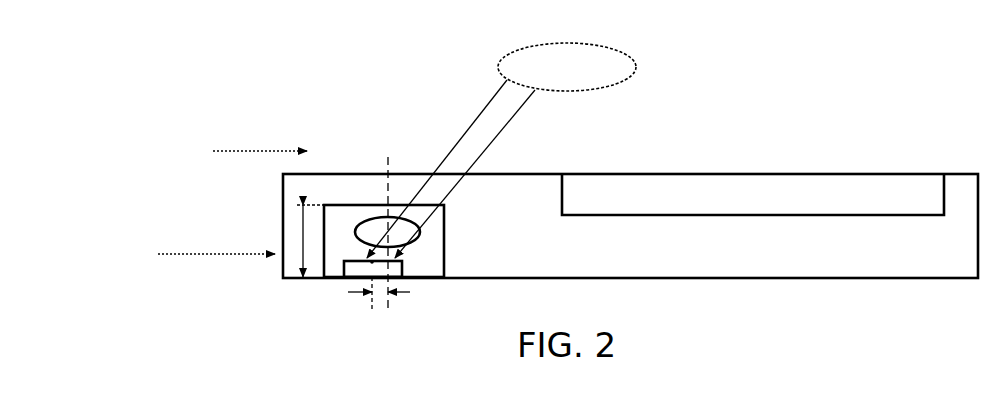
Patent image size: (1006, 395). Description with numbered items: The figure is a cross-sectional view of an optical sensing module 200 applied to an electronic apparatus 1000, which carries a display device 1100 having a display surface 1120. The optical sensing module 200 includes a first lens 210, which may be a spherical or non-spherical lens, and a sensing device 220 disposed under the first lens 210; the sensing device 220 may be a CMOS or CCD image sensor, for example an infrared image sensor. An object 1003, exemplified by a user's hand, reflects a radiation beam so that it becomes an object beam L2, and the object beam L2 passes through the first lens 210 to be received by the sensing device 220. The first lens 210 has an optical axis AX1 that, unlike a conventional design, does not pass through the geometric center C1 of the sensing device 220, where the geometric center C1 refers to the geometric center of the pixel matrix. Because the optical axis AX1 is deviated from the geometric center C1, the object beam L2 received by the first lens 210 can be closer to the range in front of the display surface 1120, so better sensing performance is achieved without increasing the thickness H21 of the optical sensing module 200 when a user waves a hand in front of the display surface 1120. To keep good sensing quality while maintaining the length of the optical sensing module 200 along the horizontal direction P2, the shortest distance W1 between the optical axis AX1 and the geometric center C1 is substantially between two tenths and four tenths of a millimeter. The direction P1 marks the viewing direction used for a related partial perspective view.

The electronic apparatus 1000 is at (631, 267).
The display device 1100 is at (697, 197).
The display surface 1120 is at (738, 174).
The object 1003 is at (640, 66).
The object beam L2 is at (493, 140).
The optical sensing module 200 is at (453, 245).
The first lens 210 is at (355, 230).
The sensing device 220 is at (410, 278).
The optical axis AX1 is at (387, 173).
The geometric center C1 is at (370, 261).
The shortest distance W1 is at (371, 292).
The thickness H21 is at (297, 237).
The horizontal direction P2 is at (260, 150).
The direction P1 is at (223, 257).